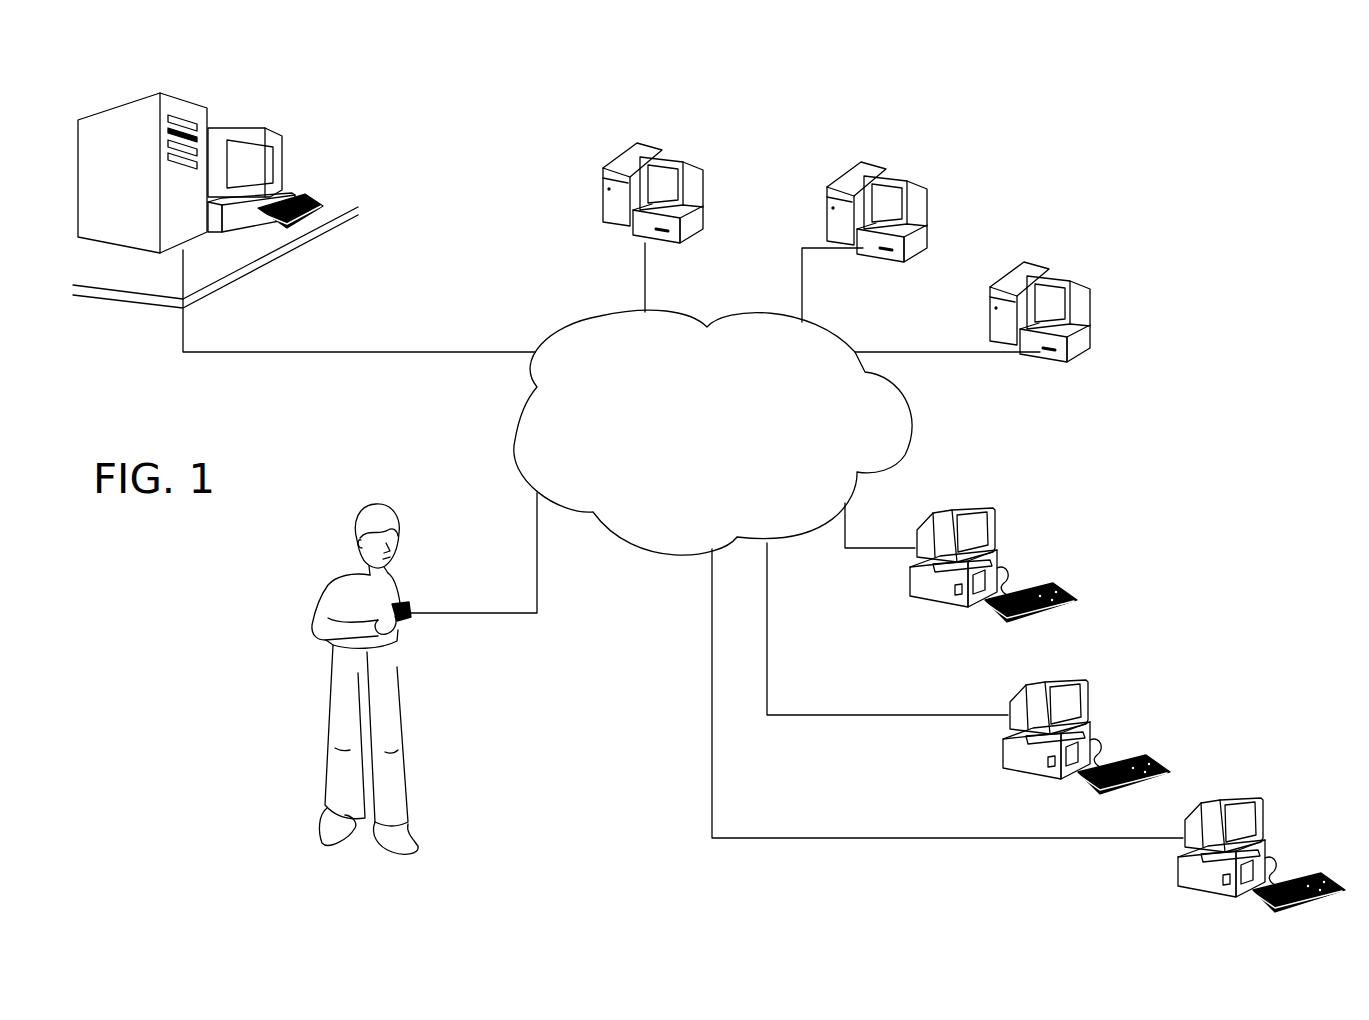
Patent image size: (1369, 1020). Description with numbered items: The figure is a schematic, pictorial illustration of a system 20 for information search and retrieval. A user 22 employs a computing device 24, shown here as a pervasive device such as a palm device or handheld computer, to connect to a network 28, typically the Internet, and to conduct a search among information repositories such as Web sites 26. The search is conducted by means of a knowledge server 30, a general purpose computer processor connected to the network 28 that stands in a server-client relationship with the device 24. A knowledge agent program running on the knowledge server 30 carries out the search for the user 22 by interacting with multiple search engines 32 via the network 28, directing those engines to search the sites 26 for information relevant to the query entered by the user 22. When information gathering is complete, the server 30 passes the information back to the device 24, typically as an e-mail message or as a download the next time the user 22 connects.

The system 20 is at (1082, 138).
The user 22 is at (390, 512).
The computing device 24 is at (411, 620).
The Web sites 26 is at (920, 583).
The network 28 is at (578, 325).
The knowledge server 30 is at (110, 132).
The search engines 32 is at (615, 193).